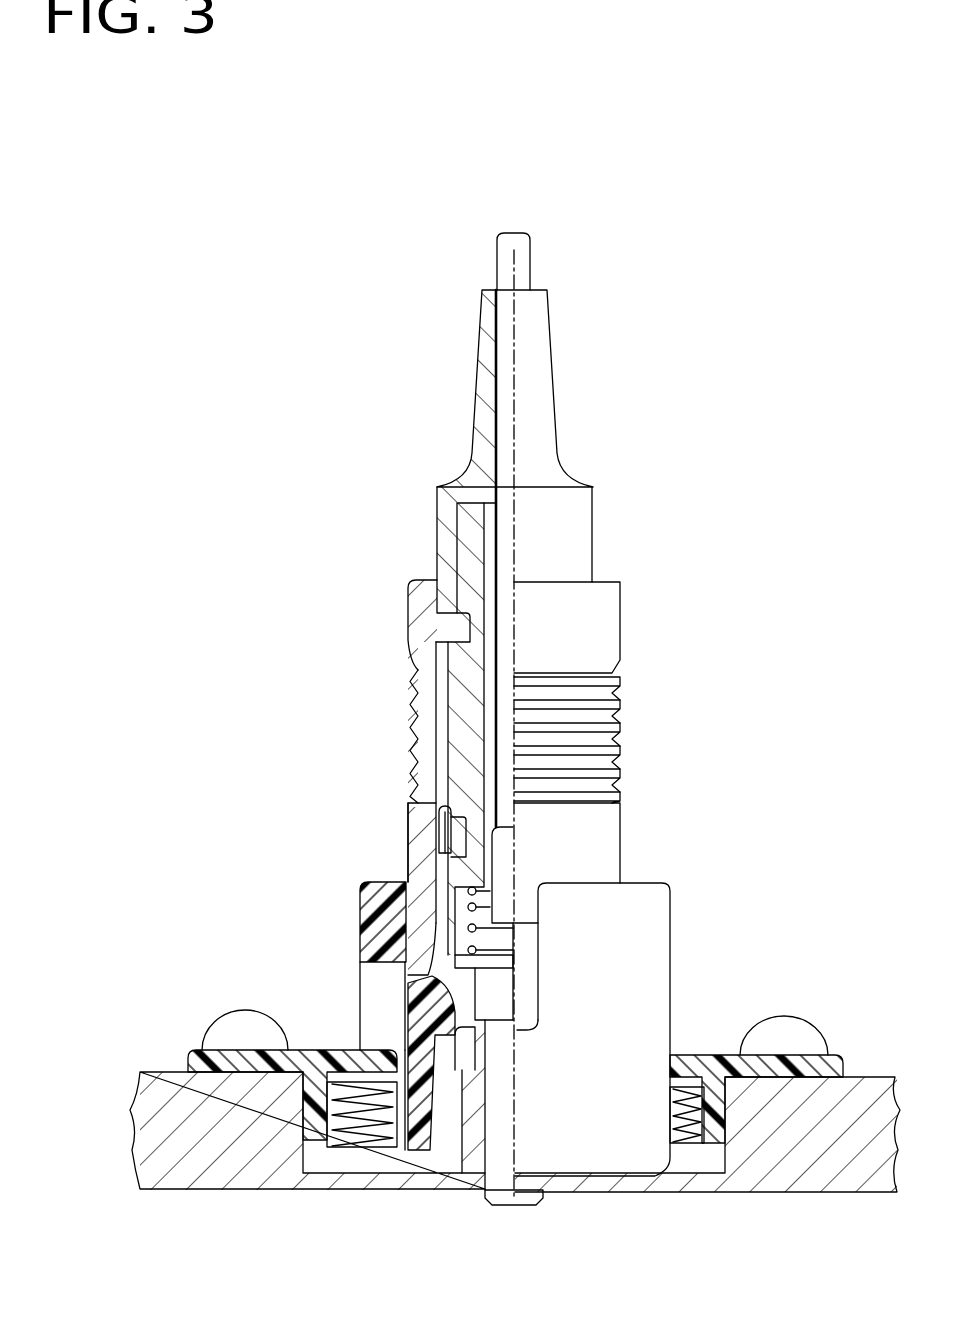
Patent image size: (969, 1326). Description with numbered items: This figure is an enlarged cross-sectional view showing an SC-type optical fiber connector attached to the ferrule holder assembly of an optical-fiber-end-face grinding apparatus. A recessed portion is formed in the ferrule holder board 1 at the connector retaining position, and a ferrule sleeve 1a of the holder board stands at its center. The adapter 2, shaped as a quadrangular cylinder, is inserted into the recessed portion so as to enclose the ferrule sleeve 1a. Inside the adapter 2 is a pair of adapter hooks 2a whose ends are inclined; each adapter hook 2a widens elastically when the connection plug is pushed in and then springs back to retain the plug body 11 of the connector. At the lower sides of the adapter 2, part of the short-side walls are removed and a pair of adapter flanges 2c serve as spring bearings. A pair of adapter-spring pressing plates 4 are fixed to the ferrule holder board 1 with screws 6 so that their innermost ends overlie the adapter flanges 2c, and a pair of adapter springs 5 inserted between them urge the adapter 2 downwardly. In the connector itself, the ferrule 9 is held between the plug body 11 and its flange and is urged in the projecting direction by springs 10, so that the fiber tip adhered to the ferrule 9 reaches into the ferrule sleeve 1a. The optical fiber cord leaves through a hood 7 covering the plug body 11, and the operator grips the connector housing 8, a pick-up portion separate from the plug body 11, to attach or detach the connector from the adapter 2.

The ferrule holder board 1 is at (870, 1112).
The ferrule sleeve 1a is at (485, 1150).
The adapter 2 is at (648, 955).
The adapter hook 2a is at (447, 1050).
The adapter flange (spring bearing) 2c is at (380, 1160).
The adapter-spring pressing plate 4 is at (338, 1058).
The adapter spring 5 is at (352, 1142).
The screw 6 is at (233, 1025).
The hood 7 is at (542, 404).
The connector housing (pick-up portion) 8 is at (420, 636).
The ferrule 9 is at (529, 1192).
The spring 10 is at (450, 872).
The plug body 11 is at (457, 987).